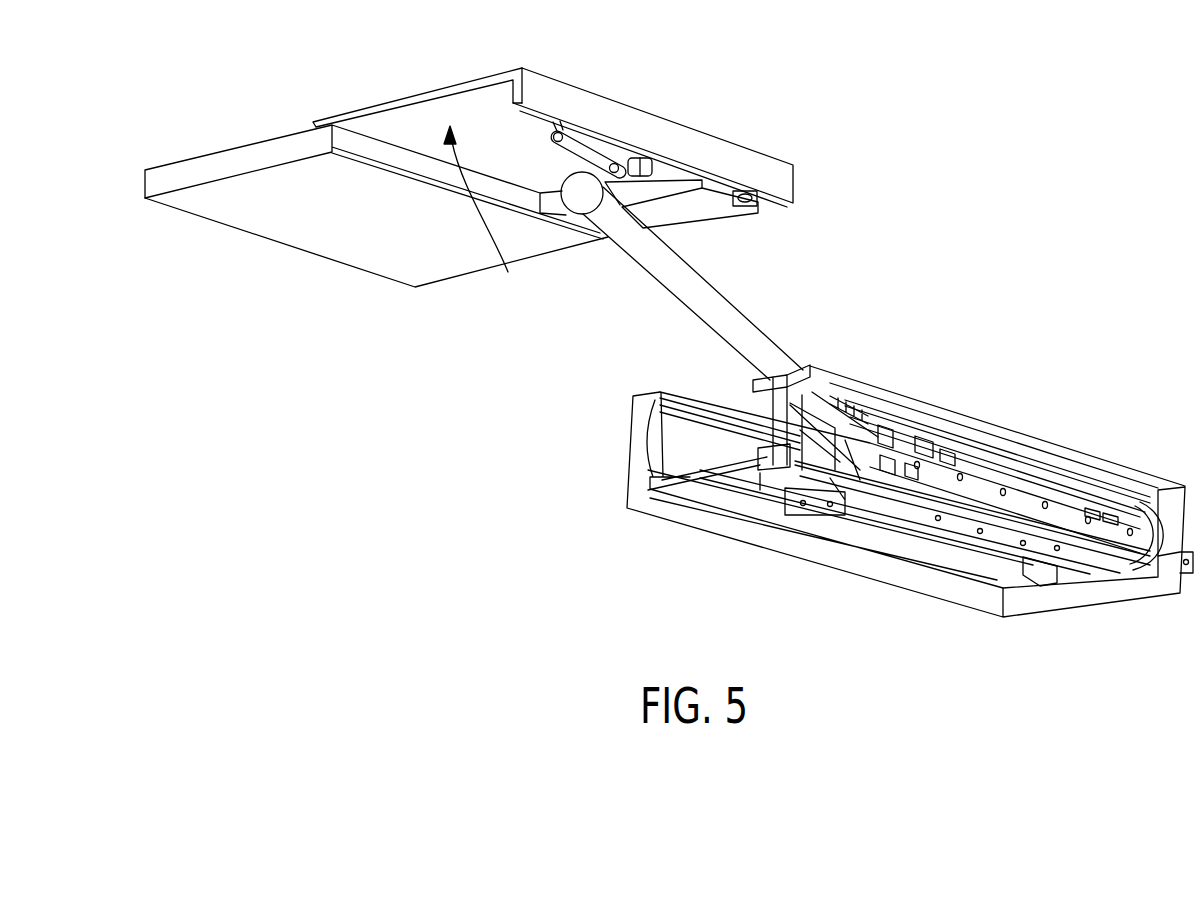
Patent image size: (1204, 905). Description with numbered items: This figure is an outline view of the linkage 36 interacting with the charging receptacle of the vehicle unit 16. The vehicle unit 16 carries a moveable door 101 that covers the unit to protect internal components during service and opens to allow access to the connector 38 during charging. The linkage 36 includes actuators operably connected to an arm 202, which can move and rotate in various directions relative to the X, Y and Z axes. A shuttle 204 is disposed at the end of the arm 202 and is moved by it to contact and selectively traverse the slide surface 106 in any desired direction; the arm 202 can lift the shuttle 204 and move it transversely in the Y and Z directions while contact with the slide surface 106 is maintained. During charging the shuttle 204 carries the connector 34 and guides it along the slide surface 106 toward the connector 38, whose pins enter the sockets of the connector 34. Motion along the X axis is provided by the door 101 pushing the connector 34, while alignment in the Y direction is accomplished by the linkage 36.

The vehicle unit 16 is at (263, 137).
The door 101 is at (305, 233).
The slide surface 106 is at (486, 221).
The shuttle 204 is at (583, 150).
The connector 34 is at (637, 160).
The connector 38 is at (752, 206).
The arm 202 is at (673, 293).
The linkage 36 is at (955, 360).